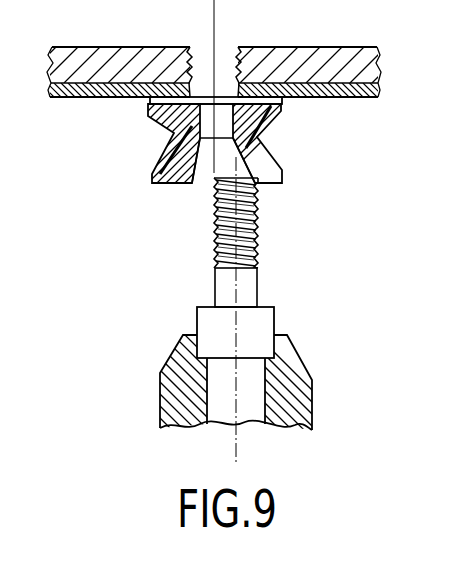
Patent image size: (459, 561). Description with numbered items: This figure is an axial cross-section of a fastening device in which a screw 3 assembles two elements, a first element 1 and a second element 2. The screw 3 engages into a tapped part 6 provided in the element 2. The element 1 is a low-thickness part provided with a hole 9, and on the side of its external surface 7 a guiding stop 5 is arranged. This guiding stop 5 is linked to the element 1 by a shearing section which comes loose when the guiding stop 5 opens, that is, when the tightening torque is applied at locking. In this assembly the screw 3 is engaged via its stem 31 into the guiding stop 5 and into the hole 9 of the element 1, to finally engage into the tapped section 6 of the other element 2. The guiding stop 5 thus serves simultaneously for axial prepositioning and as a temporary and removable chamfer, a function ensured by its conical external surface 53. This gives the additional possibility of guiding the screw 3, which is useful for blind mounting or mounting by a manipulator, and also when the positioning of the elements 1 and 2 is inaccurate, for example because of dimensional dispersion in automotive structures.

The element to be assembled 1 is at (346, 97).
The element to be assembled 2 is at (295, 61).
The screw 3 is at (268, 323).
The guiding stop 5 is at (283, 163).
The tapped part 6 is at (221, 53).
The external surface 7 is at (87, 97).
The hole 9 is at (205, 84).
The stem 31 is at (217, 289).
The conical external surface 53 is at (191, 180).